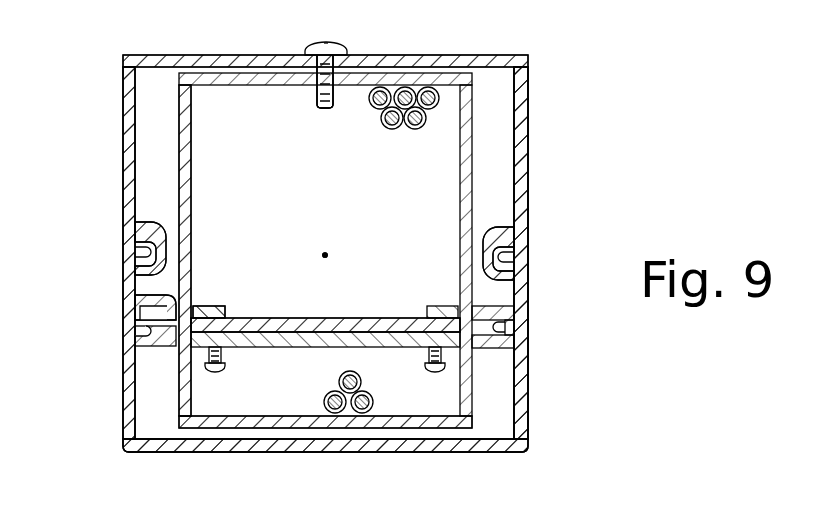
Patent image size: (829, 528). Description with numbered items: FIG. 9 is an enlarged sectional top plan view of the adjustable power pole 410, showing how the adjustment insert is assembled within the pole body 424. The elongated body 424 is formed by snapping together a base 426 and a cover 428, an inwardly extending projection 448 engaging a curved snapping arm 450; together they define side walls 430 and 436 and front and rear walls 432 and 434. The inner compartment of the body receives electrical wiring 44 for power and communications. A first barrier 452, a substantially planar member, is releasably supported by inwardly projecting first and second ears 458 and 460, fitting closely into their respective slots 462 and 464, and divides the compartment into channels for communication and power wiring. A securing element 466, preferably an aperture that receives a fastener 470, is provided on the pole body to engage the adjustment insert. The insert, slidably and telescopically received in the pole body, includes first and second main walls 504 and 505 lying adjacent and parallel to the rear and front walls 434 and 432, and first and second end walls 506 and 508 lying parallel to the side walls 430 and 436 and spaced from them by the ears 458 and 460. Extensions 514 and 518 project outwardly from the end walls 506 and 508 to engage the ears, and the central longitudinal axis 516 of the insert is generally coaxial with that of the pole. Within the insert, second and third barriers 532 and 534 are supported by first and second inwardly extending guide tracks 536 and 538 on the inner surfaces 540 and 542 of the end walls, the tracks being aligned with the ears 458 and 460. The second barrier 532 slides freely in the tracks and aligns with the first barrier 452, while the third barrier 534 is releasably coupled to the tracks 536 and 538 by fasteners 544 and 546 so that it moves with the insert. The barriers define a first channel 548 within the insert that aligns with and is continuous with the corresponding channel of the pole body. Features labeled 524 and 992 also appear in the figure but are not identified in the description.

The pole 410 is at (579, 110).
The elongated body 424 is at (540, 440).
The base 426 is at (508, 452).
The cover 428 is at (123, 137).
The side wall 430 is at (528, 157).
The front wall 432 is at (240, 452).
The rear wall 434 is at (496, 62).
The side wall 436 is at (124, 413).
The electrical wiring 44 is at (397, 134).
The inwardly extending projection 448 is at (145, 258).
The curved snapping arm 450 is at (150, 226).
The barrier 452 is at (207, 306).
The first ear 458 is at (514, 343).
The second ear 460 is at (145, 313).
The slot 462 is at (490, 318).
The slot 464 is at (137, 331).
The securing element 466 is at (343, 47).
The fastener 470 is at (321, 108).
The first main wall 504 is at (428, 78).
The second main wall 505 is at (425, 428).
The first end wall 506 is at (506, 190).
The second end wall 508 is at (179, 179).
The extension 514 is at (508, 328).
The central longitudinal axis 516 is at (325, 255).
The extension 518 is at (162, 299).
The screw threaded portion 524 is at (317, 88).
The second barrier 532 is at (322, 317).
The third barrier 534 is at (292, 348).
The first guide track 536 is at (418, 313).
The second guide track 538 is at (240, 312).
The inner surface 540 is at (462, 183).
The inner surface 542 is at (191, 186).
The fastener 544 is at (434, 368).
The fastener 546 is at (213, 370).
The first channel 548 is at (450, 399).
The reference point 992 is at (325, 255).